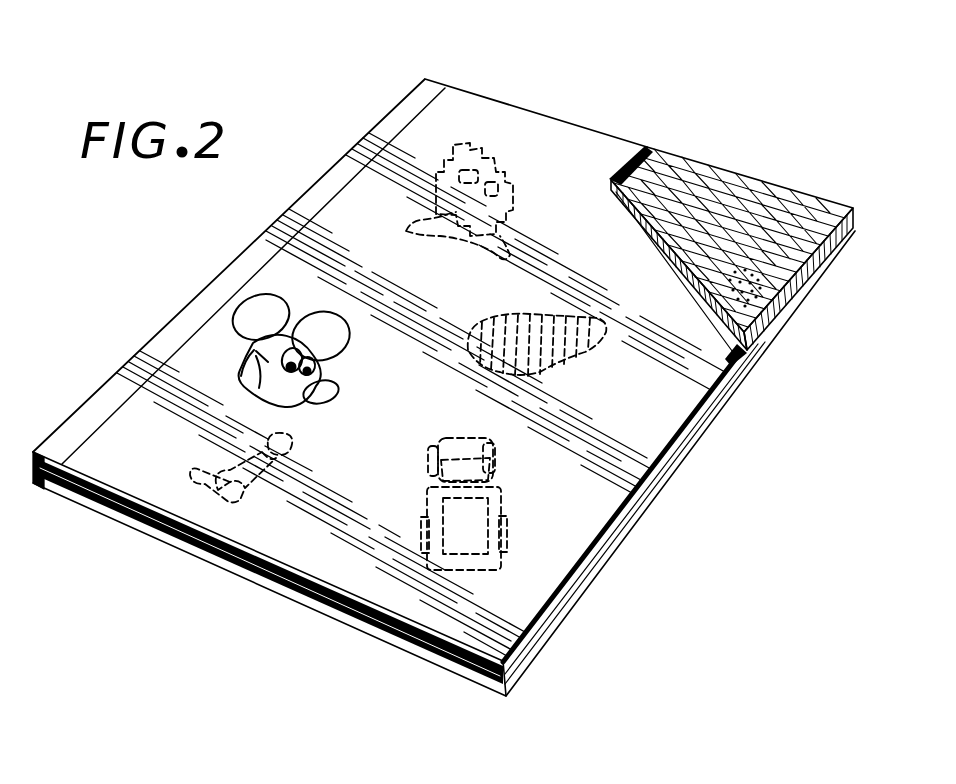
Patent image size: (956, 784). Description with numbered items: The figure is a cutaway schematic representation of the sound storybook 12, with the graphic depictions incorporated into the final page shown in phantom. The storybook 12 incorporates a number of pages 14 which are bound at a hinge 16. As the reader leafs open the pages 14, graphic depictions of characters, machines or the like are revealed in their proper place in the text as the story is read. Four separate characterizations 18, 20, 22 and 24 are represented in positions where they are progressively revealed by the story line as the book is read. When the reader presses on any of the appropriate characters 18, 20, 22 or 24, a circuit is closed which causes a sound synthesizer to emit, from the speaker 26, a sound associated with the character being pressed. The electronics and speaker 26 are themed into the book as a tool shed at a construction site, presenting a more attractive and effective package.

The sound storybook 12 is at (444, 362).
The pages 14 is at (636, 464).
The hinge 16 is at (430, 87).
The characterization 18 is at (503, 197).
The characterization 20 is at (490, 474).
The characterization 22 is at (300, 445).
The characterization 24 is at (577, 305).
The speaker 26 is at (750, 292).